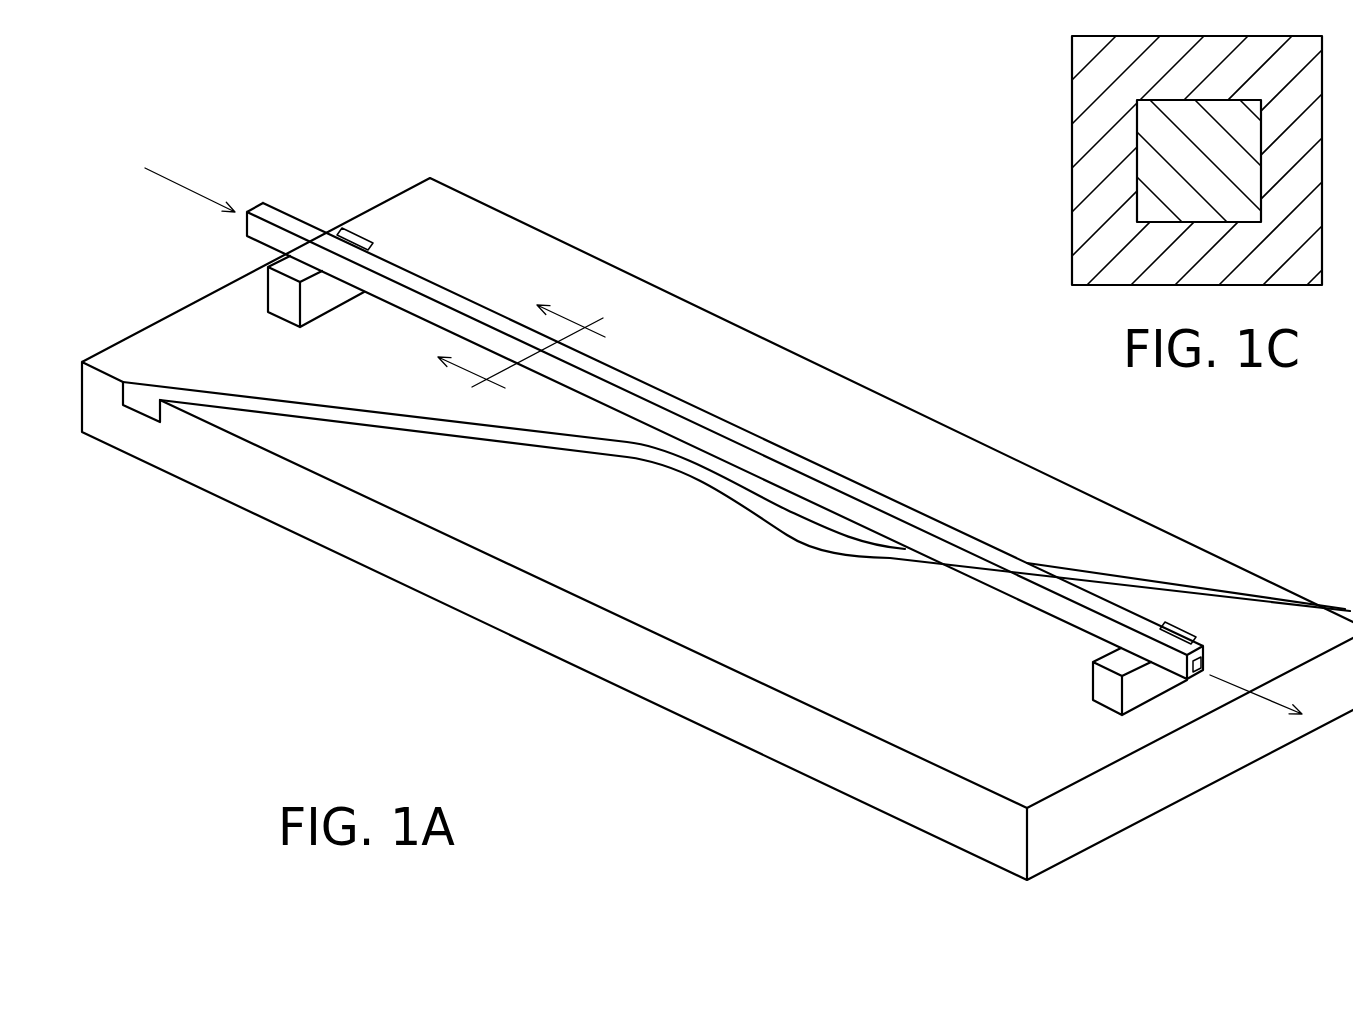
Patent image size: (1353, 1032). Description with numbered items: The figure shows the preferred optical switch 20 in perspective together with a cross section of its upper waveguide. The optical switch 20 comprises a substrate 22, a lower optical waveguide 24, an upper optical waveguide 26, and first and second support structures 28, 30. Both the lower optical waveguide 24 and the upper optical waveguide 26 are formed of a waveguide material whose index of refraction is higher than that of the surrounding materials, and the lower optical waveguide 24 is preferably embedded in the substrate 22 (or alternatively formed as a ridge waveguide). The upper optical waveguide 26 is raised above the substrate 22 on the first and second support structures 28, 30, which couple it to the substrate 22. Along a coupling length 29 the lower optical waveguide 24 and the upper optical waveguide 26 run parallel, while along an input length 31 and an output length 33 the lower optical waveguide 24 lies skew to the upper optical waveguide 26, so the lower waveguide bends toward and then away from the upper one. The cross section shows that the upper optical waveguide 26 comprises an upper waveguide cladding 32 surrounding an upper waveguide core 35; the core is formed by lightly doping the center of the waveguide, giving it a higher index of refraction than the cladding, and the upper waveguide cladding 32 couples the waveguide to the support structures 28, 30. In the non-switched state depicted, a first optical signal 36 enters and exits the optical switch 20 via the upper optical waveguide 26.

In FIG. 1A, the optical switch 20 is at (717, 504).
In FIG. 1A, the substrate 22 is at (1107, 815).
In FIG. 1A, the lower optical waveguide 24 is at (348, 415).
In FIG. 1A, the upper optical waveguide 26 is at (998, 585).
In FIG. 1C, the upper optical waveguide 26 is at (1107, 166).
In FIG. 1A, the first support structure 28 is at (265, 293).
In FIG. 1A, the coupling length 29 is at (698, 530).
In FIG. 1A, the second support structure 30 is at (1092, 688).
In FIG. 1A, the input length 31 is at (396, 388).
In FIG. 1C, the upper waveguide cladding 32 is at (1075, 268).
In FIG. 1A, the output length 33 is at (1051, 536).
In FIG. 1C, the upper waveguide core 35 is at (1137, 192).
In FIG. 1A, the first optical signal 36 is at (1240, 690).